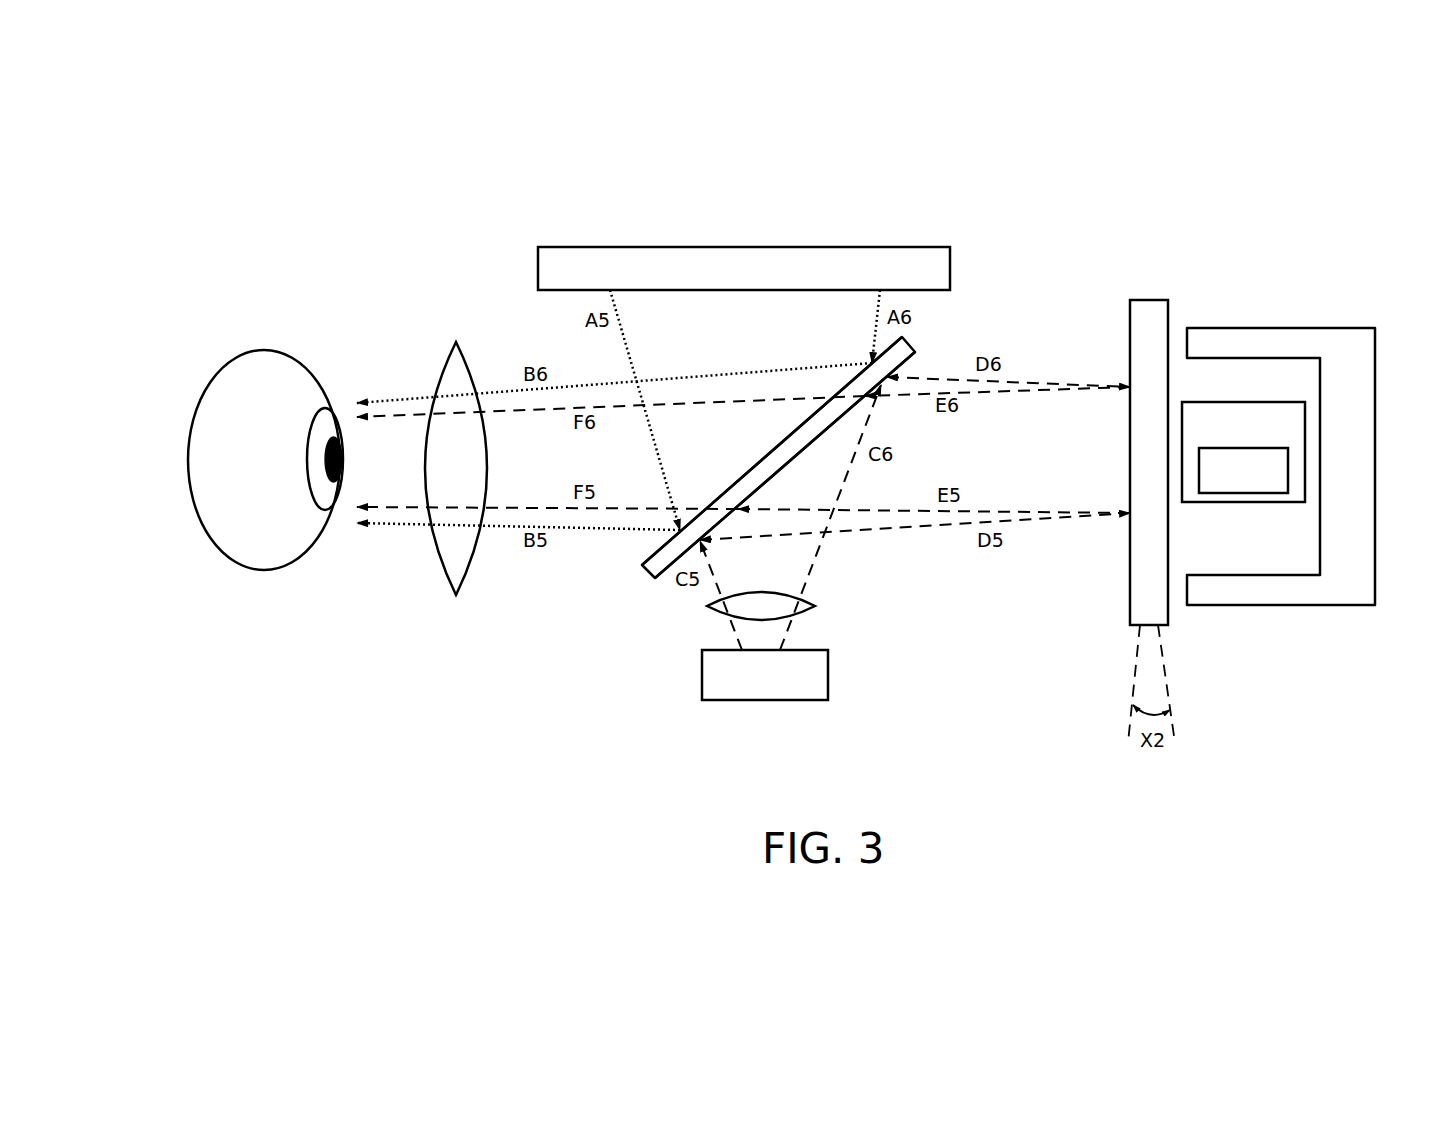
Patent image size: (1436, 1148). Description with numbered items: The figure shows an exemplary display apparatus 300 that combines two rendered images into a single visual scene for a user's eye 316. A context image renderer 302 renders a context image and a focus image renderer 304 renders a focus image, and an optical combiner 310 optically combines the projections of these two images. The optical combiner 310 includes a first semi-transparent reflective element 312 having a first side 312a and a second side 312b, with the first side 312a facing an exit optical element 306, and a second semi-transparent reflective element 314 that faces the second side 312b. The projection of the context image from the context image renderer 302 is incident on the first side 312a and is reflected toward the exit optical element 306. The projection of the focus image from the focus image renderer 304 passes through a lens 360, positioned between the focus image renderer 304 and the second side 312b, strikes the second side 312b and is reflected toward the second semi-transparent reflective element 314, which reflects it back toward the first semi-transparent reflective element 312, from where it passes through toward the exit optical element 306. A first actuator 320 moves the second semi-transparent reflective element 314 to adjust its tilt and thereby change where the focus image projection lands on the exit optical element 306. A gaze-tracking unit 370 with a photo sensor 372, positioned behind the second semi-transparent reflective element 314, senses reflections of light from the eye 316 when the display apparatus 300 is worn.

The display apparatus 300 is at (1257, 195).
The context image renderer 302 is at (730, 247).
The focus image renderer 304 is at (768, 700).
The exit optical element 306 is at (440, 365).
The optical combiner 310 is at (840, 434).
The first semi-transparent reflective element 312 is at (778, 457).
The first side 312a is at (753, 477).
The second side 312b is at (823, 433).
The second semi-transparent reflective element 314 is at (1132, 583).
The eye 316 is at (300, 570).
The first actuator 320 is at (1268, 328).
The lens 360 is at (808, 598).
The gaze-tracking unit 370 is at (1259, 431).
The photo sensor 372 is at (1259, 481).